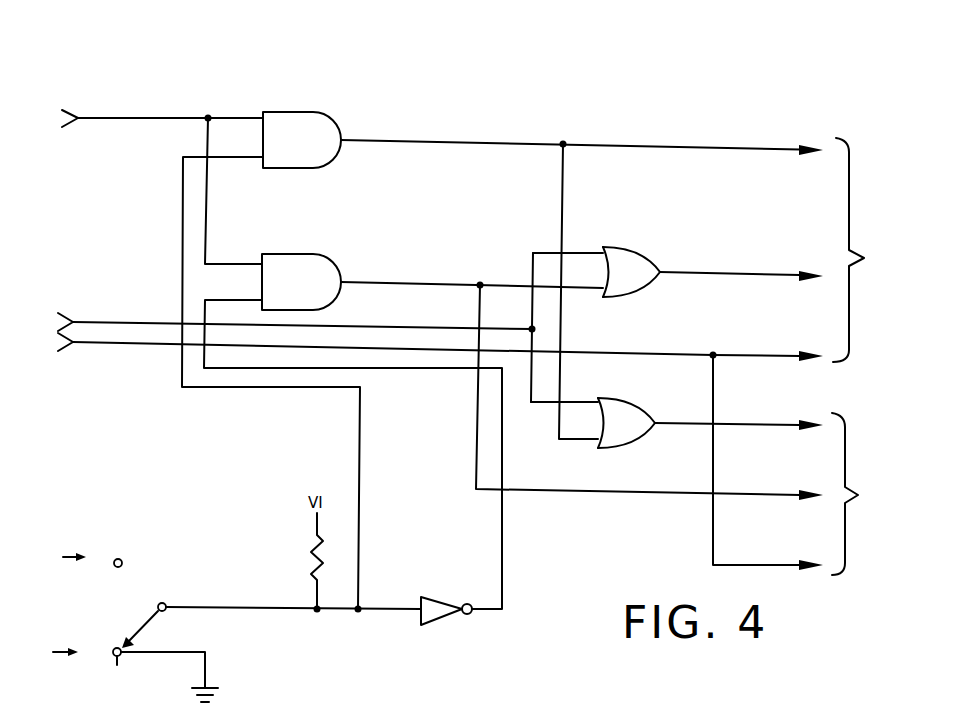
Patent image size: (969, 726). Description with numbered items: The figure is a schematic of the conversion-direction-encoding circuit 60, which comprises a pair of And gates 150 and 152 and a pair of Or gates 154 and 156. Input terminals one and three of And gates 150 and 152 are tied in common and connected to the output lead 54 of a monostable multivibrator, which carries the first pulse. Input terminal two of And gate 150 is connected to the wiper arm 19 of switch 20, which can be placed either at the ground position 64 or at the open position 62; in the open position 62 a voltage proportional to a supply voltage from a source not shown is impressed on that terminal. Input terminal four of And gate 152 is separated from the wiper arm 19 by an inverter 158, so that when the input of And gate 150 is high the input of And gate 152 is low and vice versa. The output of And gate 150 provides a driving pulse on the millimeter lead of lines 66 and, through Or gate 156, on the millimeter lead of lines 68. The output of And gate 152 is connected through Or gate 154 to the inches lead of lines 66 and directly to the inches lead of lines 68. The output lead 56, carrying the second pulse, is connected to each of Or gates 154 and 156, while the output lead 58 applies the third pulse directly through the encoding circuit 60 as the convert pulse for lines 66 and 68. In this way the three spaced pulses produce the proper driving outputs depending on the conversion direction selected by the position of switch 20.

The wiper arm 19 is at (161, 603).
The switch 20 is at (153, 626).
The output lead 54 is at (161, 97).
The output lead 56 is at (161, 302).
The output lead 58 is at (160, 346).
The conversion-direction-encoding circuit 60 is at (545, 128).
The open position 62 is at (118, 559).
The ground position 64 is at (125, 673).
The lines 66 is at (863, 250).
The lines 68 is at (861, 494).
The And gate 150 is at (323, 112).
The And gate 152 is at (329, 264).
The Or gate 154 is at (625, 247).
The Or gate 156 is at (620, 400).
The inverter 158 is at (432, 597).